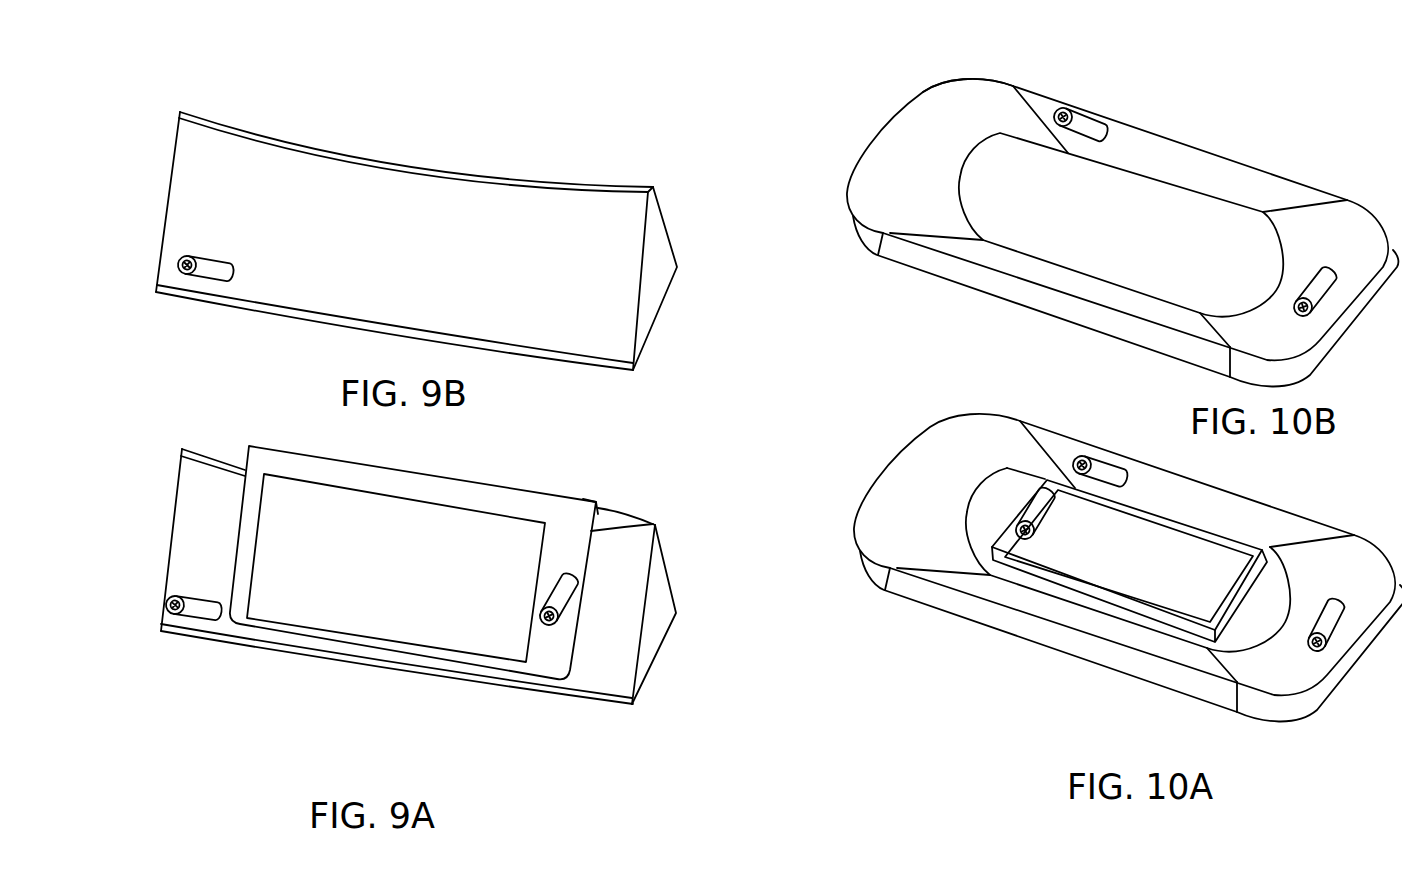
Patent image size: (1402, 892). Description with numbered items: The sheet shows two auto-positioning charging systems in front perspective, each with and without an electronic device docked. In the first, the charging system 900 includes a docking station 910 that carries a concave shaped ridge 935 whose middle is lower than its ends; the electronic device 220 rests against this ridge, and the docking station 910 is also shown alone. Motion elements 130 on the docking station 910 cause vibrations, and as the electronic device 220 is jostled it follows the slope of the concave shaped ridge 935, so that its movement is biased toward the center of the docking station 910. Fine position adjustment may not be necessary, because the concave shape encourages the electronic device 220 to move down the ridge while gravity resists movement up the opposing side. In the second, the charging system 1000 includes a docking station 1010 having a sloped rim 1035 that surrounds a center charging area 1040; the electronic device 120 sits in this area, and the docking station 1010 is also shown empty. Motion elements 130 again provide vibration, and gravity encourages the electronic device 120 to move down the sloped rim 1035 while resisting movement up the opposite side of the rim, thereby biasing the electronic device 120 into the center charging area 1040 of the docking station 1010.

In FIG. 9B, the motion elements 130 is at (215, 255).
In FIG. 9A, the motion elements 130 is at (199, 594).
In FIG. 10B, the motion elements 130 is at (1079, 108).
In FIG. 10A, the motion elements 130 is at (1096, 451).
In FIG. 9B, the docking station 910 is at (416, 231).
In FIG. 9A, the docking station 910 is at (666, 612).
In FIG. 9B, the concave shaped ridge 935 is at (405, 160).
In FIG. 9A, the charging system 900 is at (449, 553).
In FIG. 9A, the electronic device 220 is at (393, 639).
In FIG. 10B, the docking station 1010 is at (1087, 207).
In FIG. 10A, the docking station 1010 is at (853, 540).
In FIG. 10B, the sloped rim 1035 is at (958, 85).
In FIG. 10B, the center charging area 1040 is at (1136, 191).
In FIG. 10A, the charging system 1000 is at (1092, 535).
In FIG. 10A, the electronic device 120 is at (1078, 604).